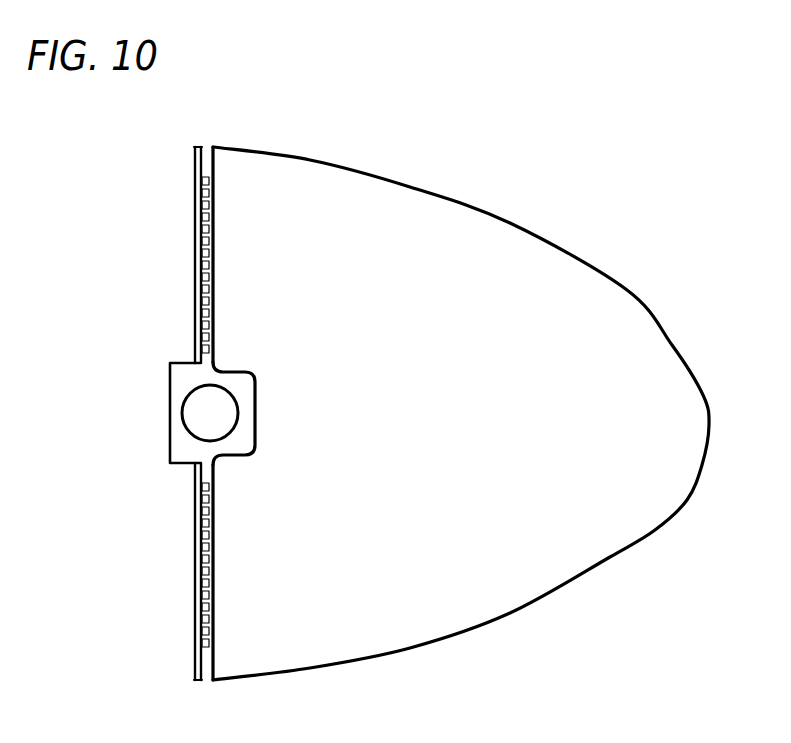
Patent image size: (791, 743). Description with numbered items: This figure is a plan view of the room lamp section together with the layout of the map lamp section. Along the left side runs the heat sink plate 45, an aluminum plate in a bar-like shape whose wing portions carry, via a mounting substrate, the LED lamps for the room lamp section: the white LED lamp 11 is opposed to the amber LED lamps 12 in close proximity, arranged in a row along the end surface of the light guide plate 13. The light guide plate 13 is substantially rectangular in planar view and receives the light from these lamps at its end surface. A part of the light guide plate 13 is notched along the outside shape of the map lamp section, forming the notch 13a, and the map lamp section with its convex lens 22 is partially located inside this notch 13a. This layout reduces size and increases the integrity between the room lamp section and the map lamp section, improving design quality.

The white LED lamp 11 is at (213, 198).
The amber LED lamp 12 is at (213, 180).
The light guide plate 13 is at (497, 236).
The notch 13a is at (244, 357).
The lens 22 is at (195, 413).
The heat sink plate 45 is at (192, 158).